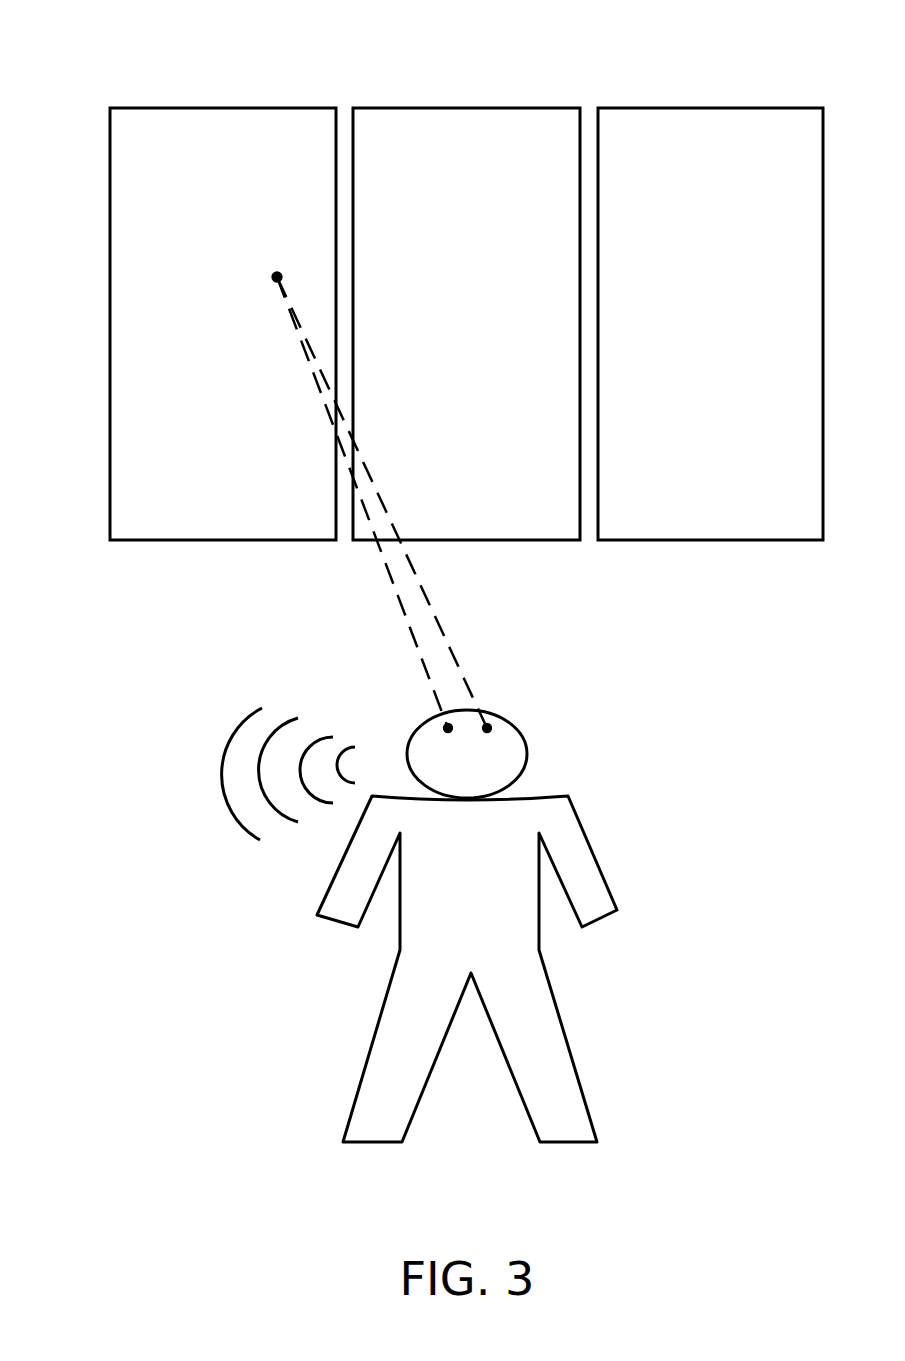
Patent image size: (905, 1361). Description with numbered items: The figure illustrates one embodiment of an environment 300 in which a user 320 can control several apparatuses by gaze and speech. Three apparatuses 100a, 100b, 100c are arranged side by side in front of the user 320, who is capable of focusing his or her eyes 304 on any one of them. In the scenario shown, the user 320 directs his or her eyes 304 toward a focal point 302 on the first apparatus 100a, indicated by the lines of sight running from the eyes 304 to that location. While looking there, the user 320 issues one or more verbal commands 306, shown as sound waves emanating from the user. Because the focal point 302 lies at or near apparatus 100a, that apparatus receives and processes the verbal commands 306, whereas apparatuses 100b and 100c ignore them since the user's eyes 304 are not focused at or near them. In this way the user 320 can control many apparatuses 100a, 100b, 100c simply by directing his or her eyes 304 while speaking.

The environment / system 300 is at (102, 52).
The apparatus 100a is at (223, 324).
The apparatus 100b is at (466, 324).
The apparatus 100c is at (710, 324).
The gaze point / target location on apparatus 302 is at (274, 262).
The eyes 304 is at (497, 716).
The verbal commands 306 is at (198, 717).
The user 320 is at (467, 941).